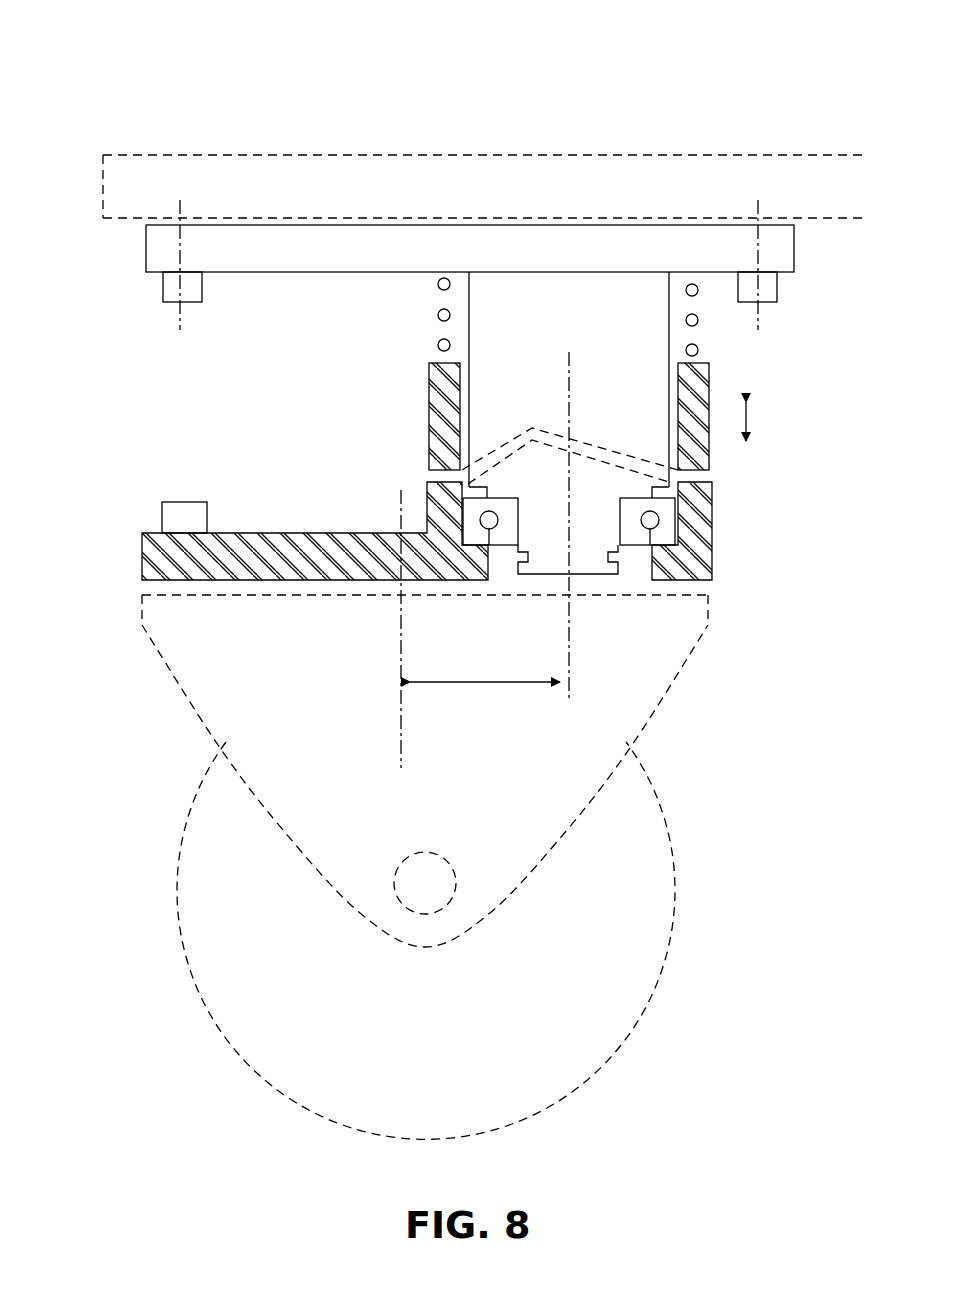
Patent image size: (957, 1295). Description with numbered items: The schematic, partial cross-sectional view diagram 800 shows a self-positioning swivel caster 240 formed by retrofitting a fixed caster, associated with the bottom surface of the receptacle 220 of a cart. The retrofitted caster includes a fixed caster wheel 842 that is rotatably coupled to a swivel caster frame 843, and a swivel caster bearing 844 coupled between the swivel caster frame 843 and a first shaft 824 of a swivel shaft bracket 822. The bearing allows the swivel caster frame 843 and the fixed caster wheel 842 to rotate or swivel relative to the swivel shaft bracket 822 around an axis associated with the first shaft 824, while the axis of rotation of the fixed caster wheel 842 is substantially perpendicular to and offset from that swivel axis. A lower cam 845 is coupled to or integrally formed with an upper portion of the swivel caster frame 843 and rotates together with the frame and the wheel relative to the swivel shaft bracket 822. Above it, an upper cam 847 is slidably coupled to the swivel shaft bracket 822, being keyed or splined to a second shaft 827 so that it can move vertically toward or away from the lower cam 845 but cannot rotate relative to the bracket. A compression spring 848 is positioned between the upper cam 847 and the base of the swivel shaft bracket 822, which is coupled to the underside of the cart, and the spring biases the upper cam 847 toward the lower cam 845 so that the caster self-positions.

The schematic partial cross-sectional view diagram 800 is at (750, 80).
The receptacle 220 is at (268, 201).
The swivel shaft bracket 822 is at (307, 261).
The self-positioning swivel caster 240 is at (153, 356).
The second shaft 827 is at (466, 327).
The compression spring 848 is at (699, 350).
The upper cam 847 is at (713, 375).
The swivel caster frame 843 is at (285, 533).
The lower cam 845 is at (714, 514).
The swivel caster bearing 844 is at (656, 535).
The first shaft 824 is at (590, 574).
The fixed caster wheel 842 is at (378, 823).